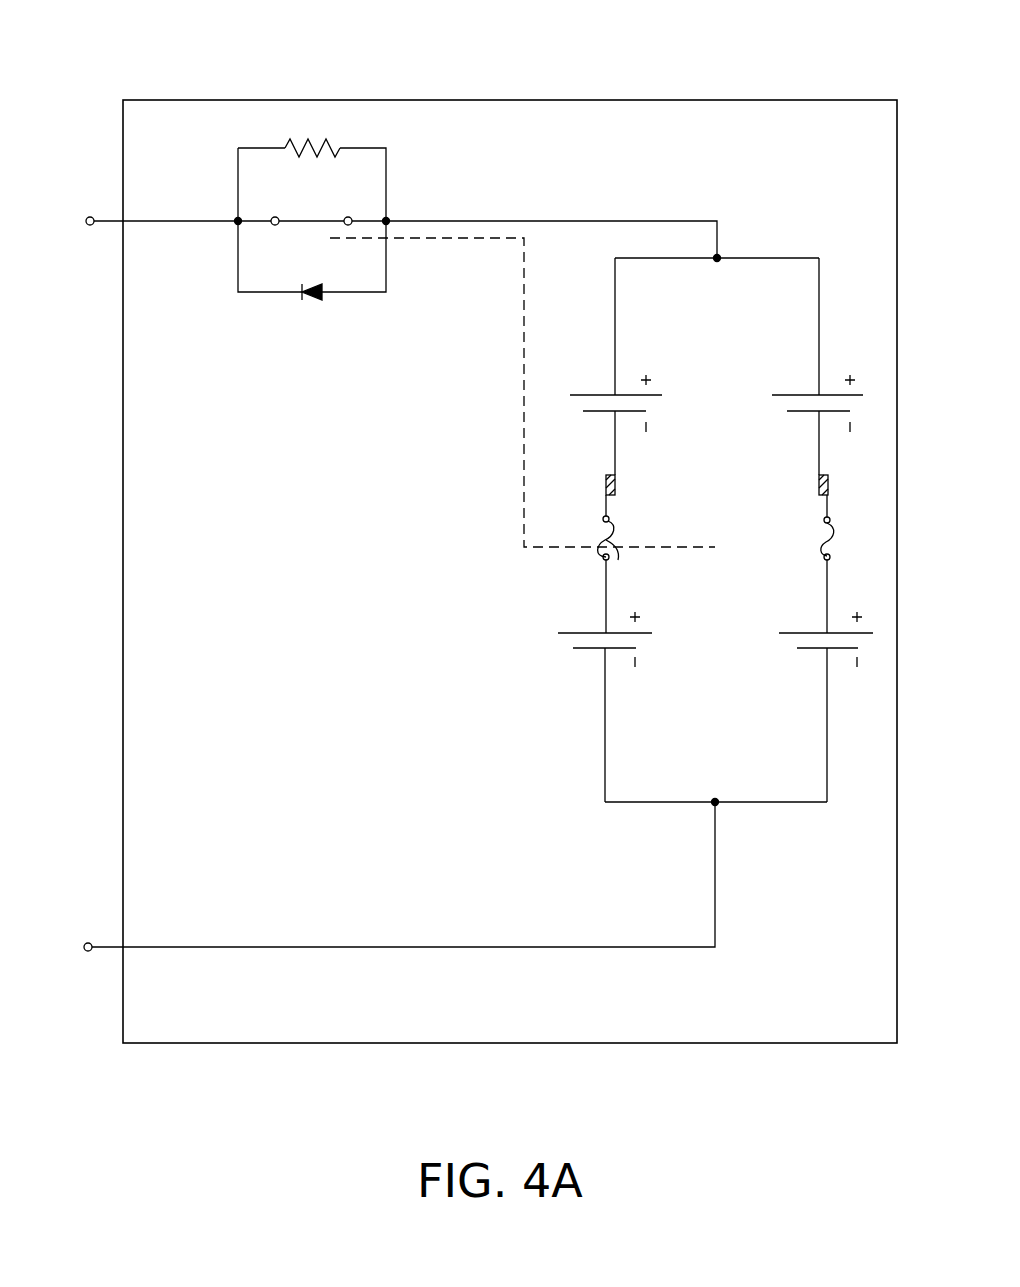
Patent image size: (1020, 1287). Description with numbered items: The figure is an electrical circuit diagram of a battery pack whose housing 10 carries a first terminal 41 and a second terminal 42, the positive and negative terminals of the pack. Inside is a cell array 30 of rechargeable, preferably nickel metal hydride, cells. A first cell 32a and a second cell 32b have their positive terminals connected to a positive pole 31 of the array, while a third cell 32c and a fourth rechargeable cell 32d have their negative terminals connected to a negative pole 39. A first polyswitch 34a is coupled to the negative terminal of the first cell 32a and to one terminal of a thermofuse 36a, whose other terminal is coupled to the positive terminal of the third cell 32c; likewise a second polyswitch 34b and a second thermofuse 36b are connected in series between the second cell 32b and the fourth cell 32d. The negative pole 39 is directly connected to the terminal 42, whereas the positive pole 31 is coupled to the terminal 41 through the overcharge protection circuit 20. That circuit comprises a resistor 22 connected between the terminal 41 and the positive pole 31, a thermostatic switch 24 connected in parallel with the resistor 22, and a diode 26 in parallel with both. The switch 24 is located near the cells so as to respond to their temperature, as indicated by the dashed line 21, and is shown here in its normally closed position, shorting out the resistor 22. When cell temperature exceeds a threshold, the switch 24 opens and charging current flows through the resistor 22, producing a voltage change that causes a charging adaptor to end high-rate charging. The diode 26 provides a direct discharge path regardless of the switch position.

The housing 10 is at (488, 100).
The overcharge protection circuit 20 is at (310, 254).
The dashed line 21 is at (524, 450).
The resistor 22 is at (315, 141).
The thermostatic switch 24 is at (308, 216).
The diode 26 is at (289, 351).
The cell array 30 is at (629, 480).
The positive pole 31 is at (725, 252).
The first cell 32a is at (625, 395).
The second cell 32b is at (812, 395).
The third cell 32c is at (613, 655).
The fourth rechargeable cell 32d is at (822, 655).
The first polyswitch 34a is at (618, 490).
The second polyswitch 34b is at (815, 490).
The thermofuse 36a is at (632, 574).
The second thermofuse 36b is at (820, 548).
The negative pole 39 is at (713, 805).
The first terminal 41 is at (105, 222).
The second terminal 42 is at (102, 945).